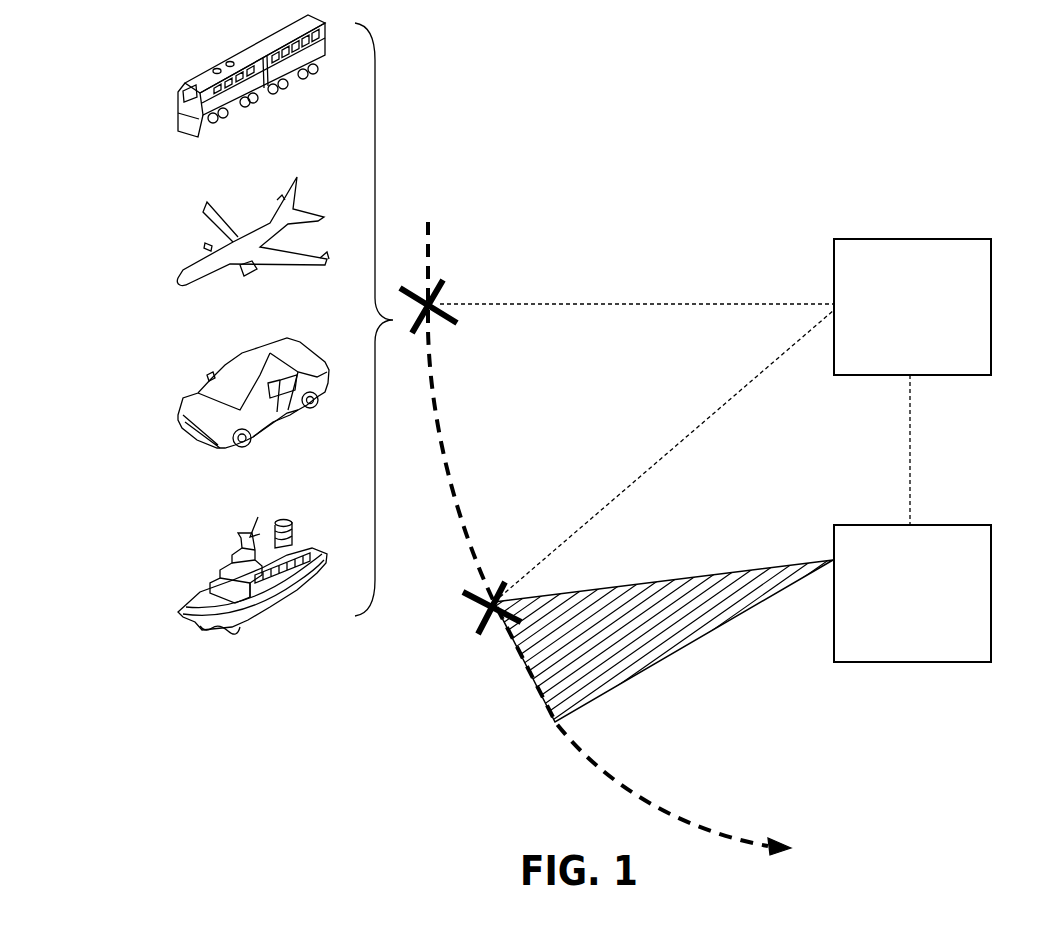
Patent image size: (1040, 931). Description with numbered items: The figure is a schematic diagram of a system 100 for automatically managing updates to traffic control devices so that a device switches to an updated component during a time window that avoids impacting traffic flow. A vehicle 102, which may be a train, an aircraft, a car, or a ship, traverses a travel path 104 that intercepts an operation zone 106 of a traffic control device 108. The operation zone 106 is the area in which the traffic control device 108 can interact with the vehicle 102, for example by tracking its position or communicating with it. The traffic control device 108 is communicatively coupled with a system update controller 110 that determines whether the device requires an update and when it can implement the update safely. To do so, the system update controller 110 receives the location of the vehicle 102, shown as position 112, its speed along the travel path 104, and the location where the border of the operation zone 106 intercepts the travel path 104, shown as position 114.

The system 100 is at (845, 78).
The vehicle 102 is at (138, 128).
The travel path 104 is at (430, 230).
The operation zone 106 is at (662, 630).
The traffic control device 108 is at (897, 647).
The system update controller 110 is at (897, 360).
The position 112 is at (448, 298).
The position 114 is at (472, 614).